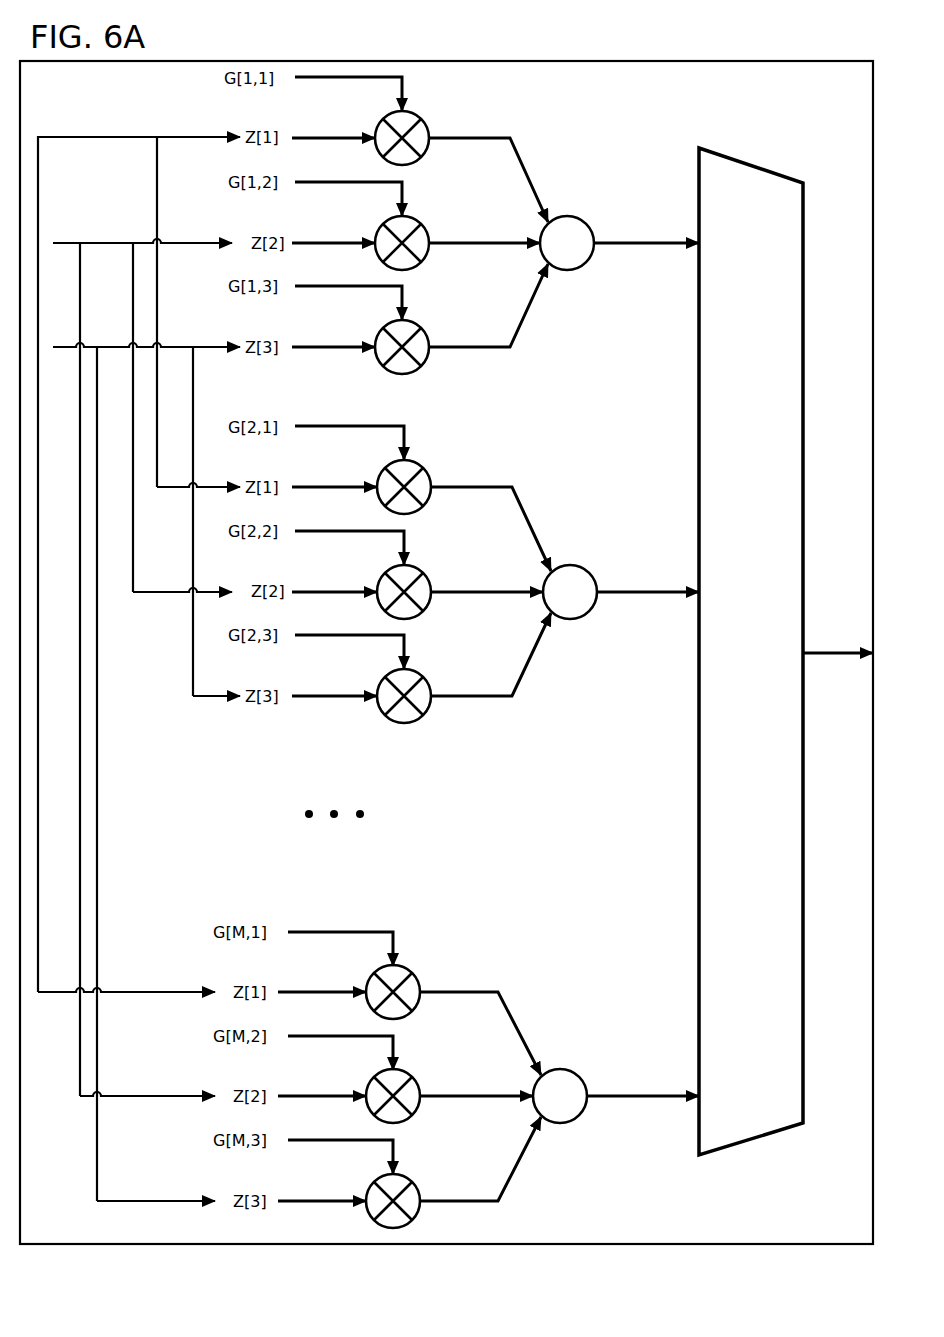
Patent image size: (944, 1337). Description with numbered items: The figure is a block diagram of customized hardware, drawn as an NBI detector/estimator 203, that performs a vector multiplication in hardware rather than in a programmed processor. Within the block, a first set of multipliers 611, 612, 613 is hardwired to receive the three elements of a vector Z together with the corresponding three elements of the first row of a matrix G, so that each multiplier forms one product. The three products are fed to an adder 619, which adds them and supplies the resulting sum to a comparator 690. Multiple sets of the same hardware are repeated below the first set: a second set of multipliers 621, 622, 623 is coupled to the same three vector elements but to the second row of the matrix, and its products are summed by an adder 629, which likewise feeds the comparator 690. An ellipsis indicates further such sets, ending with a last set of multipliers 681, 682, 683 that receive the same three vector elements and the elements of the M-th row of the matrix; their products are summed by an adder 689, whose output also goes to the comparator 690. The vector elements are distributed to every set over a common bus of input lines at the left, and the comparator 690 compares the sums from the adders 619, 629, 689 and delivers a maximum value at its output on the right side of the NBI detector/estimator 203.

The NBI detector/estimator 203 is at (446, 652).
The multiplier 611 is at (420, 118).
The multiplier 612 is at (420, 223).
The multiplier 613 is at (420, 327).
The adder 619 is at (585, 225).
The multiplier 621 is at (422, 467).
The multiplier 622 is at (422, 572).
The multiplier 623 is at (422, 676).
The adder 629 is at (588, 574).
The multiplier 681 is at (411, 972).
The multiplier 682 is at (411, 1076).
The multiplier 683 is at (411, 1181).
The adder 689 is at (578, 1078).
The comparator 690 is at (752, 168).